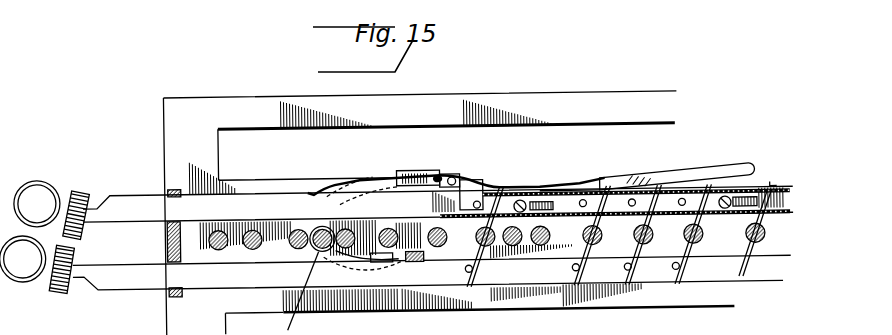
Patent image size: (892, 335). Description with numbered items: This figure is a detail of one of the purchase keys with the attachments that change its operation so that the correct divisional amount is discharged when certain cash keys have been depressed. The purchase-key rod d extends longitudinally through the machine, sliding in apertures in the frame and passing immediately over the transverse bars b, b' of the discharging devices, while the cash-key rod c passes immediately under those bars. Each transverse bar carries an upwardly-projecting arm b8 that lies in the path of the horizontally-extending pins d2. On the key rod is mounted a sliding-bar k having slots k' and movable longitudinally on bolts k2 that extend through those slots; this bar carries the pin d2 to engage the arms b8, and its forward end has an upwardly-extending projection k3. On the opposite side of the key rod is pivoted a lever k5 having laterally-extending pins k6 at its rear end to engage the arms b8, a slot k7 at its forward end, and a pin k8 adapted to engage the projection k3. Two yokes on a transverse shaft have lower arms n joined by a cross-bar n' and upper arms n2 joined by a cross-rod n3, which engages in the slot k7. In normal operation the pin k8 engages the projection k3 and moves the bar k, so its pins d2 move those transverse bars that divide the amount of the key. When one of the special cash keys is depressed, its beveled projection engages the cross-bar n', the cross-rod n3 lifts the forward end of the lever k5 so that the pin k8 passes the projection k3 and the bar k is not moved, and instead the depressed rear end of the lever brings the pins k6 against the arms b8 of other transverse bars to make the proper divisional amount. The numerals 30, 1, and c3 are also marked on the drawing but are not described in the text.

The adjusting knob 30 is at (45, 237).
The type bar pivot 1 is at (210, 243).
The transverse bar b is at (433, 251).
The transverse bar b' is at (298, 202).
The purchase-key rod d is at (341, 232).
The upper arm of yoke n2 is at (397, 176).
The slot k7 is at (433, 187).
The cross-rod n3 is at (447, 182).
The pin k8 is at (449, 182).
The upwardly-extending projection k3 is at (468, 187).
The lever k5 is at (487, 184).
The sliding-bar k is at (615, 210).
The bolt k2 is at (712, 222).
The slot k' is at (660, 174).
The pin d2 is at (600, 224).
The laterally-extending pin k6 is at (748, 176).
The upwardly-projecting arm b8 is at (700, 196).
The cash-key rod c is at (718, 276).
The block c3 is at (400, 295).
The lower arm of yoke n is at (343, 295).
The cross-bar n' is at (409, 298).